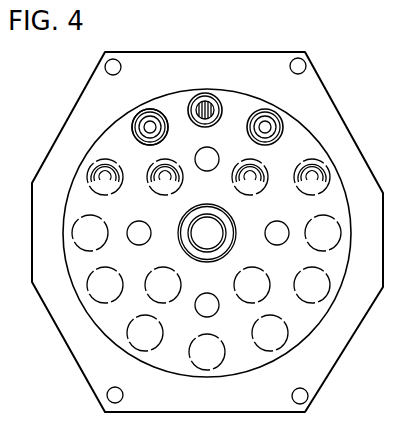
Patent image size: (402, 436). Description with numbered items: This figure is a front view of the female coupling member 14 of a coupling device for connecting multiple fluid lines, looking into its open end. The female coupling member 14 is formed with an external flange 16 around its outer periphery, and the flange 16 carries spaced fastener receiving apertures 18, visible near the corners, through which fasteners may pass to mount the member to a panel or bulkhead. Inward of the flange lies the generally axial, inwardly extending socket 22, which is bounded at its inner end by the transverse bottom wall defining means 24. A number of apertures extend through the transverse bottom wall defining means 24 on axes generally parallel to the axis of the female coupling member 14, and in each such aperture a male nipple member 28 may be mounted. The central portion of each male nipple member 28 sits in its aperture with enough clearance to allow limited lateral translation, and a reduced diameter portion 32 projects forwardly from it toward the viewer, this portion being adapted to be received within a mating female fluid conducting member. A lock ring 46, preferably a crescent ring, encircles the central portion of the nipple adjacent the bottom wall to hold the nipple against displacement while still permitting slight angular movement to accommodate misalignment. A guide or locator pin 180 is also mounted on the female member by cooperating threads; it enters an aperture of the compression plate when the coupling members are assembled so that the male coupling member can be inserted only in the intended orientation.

The female coupling member 14 is at (342, 100).
The external flange 16 is at (236, 52).
The fastener receiving apertures 18 is at (306, 63).
The socket 22 is at (306, 320).
The transverse bottom wall defining means 24 is at (112, 315).
The male nipple member 28 is at (132, 107).
The reduced diameter portion 32 is at (265, 109).
The lock ring 46 is at (149, 109).
The locator pin 180 is at (203, 93).